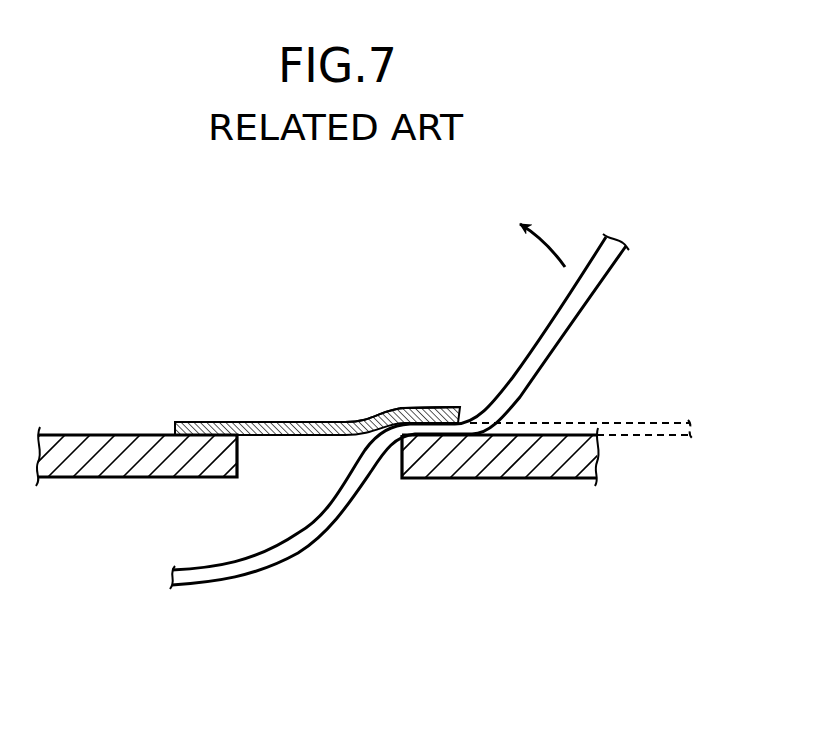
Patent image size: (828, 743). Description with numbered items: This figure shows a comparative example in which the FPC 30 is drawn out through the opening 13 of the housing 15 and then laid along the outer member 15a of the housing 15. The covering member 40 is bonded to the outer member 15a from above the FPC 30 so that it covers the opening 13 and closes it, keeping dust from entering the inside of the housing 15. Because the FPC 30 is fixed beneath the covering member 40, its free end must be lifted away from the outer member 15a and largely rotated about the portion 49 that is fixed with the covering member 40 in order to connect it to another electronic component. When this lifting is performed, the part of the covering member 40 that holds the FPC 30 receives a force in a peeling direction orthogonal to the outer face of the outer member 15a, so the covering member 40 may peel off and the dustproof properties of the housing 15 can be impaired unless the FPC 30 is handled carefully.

The housing 15 is at (80, 457).
The outer member 15a is at (548, 458).
The covering member 40 is at (220, 422).
The opening 13 is at (237, 447).
The FPC 30 is at (598, 292).
The portion fixed with the covering member 49 is at (424, 390).